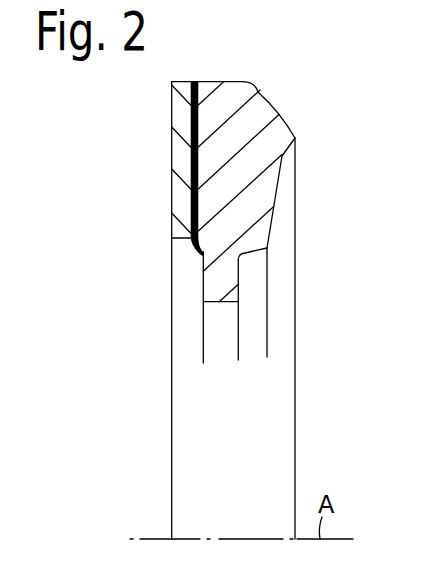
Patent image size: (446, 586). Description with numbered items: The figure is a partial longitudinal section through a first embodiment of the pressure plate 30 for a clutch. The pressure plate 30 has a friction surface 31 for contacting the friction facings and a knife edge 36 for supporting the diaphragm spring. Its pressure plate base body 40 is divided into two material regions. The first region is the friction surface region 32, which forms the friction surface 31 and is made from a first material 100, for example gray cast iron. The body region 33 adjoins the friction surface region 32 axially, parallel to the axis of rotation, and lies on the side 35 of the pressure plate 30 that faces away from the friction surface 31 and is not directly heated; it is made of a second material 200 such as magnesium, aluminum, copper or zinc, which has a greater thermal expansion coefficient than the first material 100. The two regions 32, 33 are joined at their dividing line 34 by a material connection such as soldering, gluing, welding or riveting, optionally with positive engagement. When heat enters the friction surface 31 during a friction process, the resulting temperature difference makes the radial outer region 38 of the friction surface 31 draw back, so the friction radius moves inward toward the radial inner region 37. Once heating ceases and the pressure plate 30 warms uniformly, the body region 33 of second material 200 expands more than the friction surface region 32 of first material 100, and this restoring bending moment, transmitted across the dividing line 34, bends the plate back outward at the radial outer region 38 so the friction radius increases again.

The pressure plate 30 is at (71, 231).
The friction surface 31 is at (172, 183).
The friction surface region 32 is at (182, 123).
The body region 33 is at (280, 125).
The dividing line 34 is at (195, 240).
The side 35 is at (298, 91).
The knife edge 36 is at (295, 138).
The radial inner region 37 is at (143, 220).
The radial outer region 38 is at (143, 144).
The pressure plate base body 40 is at (222, 349).
The first material 100 is at (190, 223).
The second material 200 is at (257, 230).